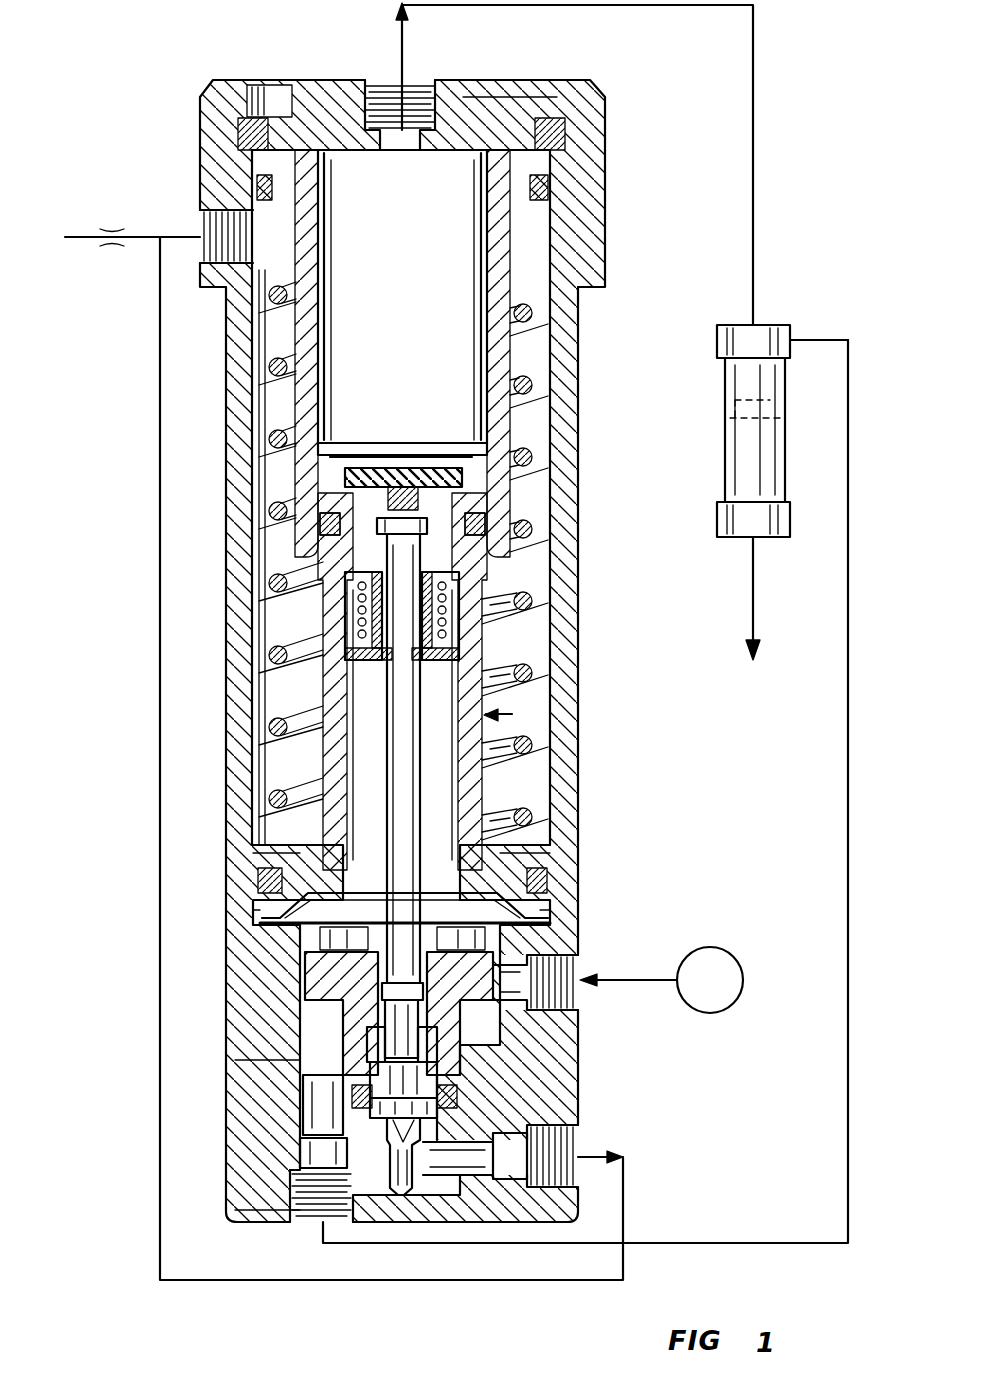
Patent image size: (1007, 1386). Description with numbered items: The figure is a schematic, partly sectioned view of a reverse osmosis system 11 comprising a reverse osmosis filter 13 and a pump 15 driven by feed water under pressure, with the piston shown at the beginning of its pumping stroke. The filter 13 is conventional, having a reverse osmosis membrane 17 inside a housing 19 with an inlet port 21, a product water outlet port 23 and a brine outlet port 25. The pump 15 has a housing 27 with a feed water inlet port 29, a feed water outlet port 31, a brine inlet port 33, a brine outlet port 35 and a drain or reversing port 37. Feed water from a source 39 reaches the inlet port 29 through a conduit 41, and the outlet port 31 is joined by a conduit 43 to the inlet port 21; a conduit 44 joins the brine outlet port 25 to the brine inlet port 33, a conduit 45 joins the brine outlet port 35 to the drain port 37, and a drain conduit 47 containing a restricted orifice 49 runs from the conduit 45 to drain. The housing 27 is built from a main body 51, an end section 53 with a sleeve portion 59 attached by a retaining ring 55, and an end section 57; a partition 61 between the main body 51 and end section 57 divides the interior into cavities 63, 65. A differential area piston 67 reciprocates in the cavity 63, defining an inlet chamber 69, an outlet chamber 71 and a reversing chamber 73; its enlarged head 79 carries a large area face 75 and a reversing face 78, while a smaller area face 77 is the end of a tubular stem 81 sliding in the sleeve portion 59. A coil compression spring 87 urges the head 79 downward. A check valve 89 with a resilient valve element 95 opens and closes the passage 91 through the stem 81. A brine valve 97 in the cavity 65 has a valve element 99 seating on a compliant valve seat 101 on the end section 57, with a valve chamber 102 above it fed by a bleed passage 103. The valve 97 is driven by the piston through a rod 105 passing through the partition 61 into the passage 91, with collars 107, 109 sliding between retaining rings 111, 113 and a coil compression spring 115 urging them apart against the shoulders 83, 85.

The reverse osmosis system 11 is at (818, 148).
The reverse osmosis filter 13 is at (752, 453).
The pump 15 is at (596, 667).
The reverse osmosis membrane 17 is at (740, 405).
The housing 19 is at (720, 511).
The inlet port 21 is at (755, 322).
The product water outlet port 23 is at (752, 545).
The brine outlet port 25 is at (792, 340).
The housing 27 is at (203, 144).
The feed water inlet port 29 is at (580, 965).
The feed water outlet port 31 is at (405, 95).
The brine inlet port 33 is at (305, 1195).
The brine outlet port 35 is at (578, 1140).
The drain or reversing port 37 is at (205, 235).
The source 39 is at (742, 902).
The conduit 41 is at (665, 985).
The conduit 43 is at (753, 95).
The conduit 44 is at (848, 600).
The conduit 45 is at (160, 1280).
The drain conduit 47 is at (136, 237).
The restricted orifice 49 is at (112, 252).
The main body 51 is at (598, 200).
The end section 53 is at (475, 115).
The retaining ring 55 is at (560, 130).
The end section 57 is at (530, 1205).
The sleeve portion 59 is at (497, 285).
The partition 61 is at (315, 975).
The cavity 63 is at (530, 790).
The cavity 65 is at (305, 1030).
The piston 67 is at (512, 714).
The inlet chamber 69 is at (505, 905).
The outlet chamber 71 is at (410, 271).
The reversing chamber 73 is at (270, 345).
The large area face 75 is at (400, 903).
The smaller area face 77 is at (322, 470).
The reversing face 78 is at (262, 835).
The enlarged head 79 is at (262, 860).
The tubular stem 81 is at (283, 765).
The annular internal shoulder 83 is at (340, 612).
The shoulder 85 is at (480, 860).
The coil compression spring 87 is at (530, 310).
The check valve 89 is at (440, 450).
The passage 91 is at (365, 682).
The valve element 95 is at (405, 475).
The brine valve 97 is at (360, 470).
The valve element 99 is at (405, 1200).
The valve seat 101 is at (445, 1160).
The valve chamber 102 is at (440, 1045).
The bleed passage 103 is at (370, 1075).
The rod 105 is at (315, 930).
The collar 107 is at (450, 580).
The collar 109 is at (458, 597).
The retaining ring 111 is at (405, 528).
The retaining ring 113 is at (455, 652).
The coil compression spring 115 is at (362, 622).